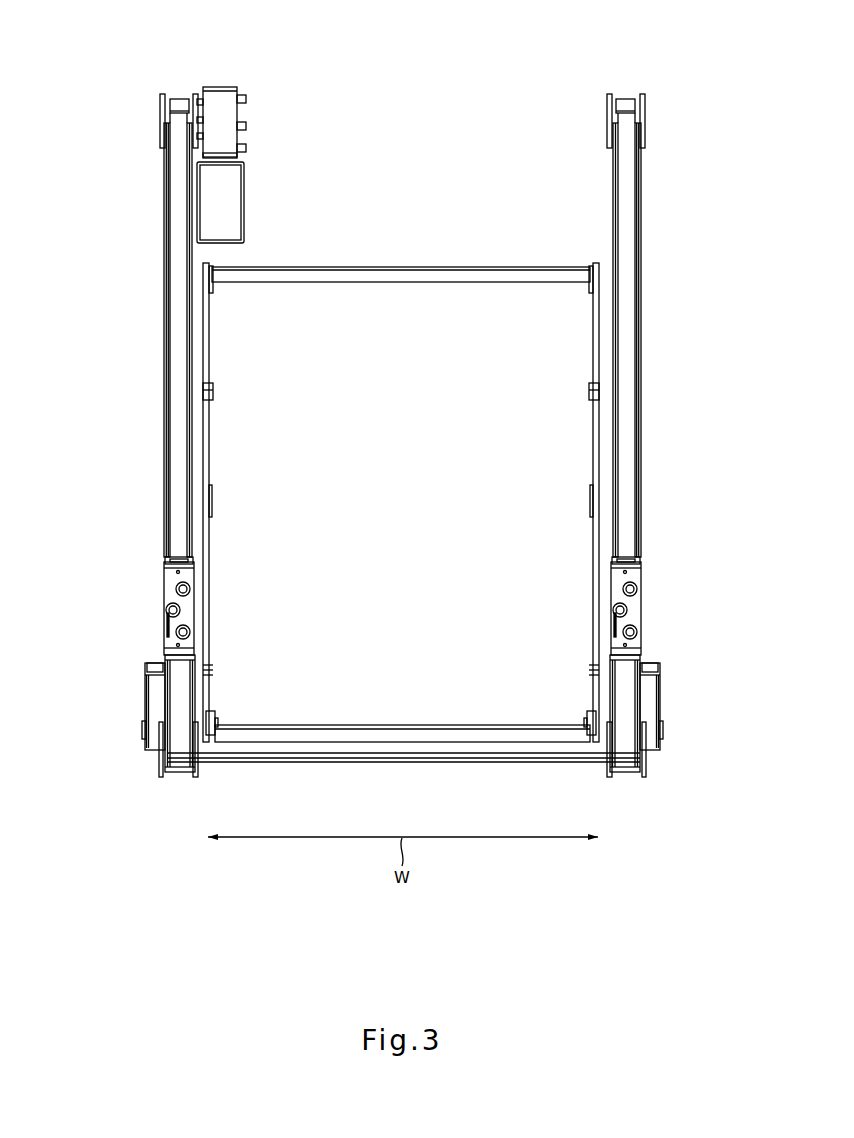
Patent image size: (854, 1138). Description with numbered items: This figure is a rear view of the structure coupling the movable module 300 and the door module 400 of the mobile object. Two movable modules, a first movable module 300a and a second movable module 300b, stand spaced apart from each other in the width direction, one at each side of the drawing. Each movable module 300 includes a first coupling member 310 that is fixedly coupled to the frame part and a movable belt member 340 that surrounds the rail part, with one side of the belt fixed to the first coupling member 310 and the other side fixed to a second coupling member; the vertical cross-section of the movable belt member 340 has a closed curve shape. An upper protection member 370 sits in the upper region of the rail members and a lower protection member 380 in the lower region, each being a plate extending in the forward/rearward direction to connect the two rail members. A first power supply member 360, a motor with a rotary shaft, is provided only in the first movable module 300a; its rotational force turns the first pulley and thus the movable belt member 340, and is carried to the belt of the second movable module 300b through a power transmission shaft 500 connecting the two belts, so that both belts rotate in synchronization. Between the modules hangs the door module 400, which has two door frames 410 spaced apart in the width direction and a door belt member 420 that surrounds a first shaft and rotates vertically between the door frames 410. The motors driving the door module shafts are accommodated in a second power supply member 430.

The movable module 300 is at (392, 27).
The first movable module 300a is at (97, 168).
The second movable module 300b is at (698, 90).
The first coupling member 310 is at (168, 609).
The movable belt member 340 is at (180, 325).
The first power supply member 360 is at (222, 110).
The upper protection member 370 is at (160, 98).
The lower protection member 380 is at (199, 772).
The door module 400 is at (315, 243).
The door frame 410 is at (203, 430).
The door belt member 420 is at (420, 308).
The second power supply member 430 is at (147, 719).
The power transmission shaft 500 is at (368, 763).